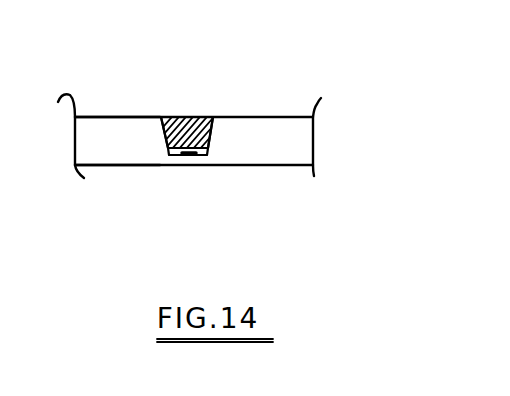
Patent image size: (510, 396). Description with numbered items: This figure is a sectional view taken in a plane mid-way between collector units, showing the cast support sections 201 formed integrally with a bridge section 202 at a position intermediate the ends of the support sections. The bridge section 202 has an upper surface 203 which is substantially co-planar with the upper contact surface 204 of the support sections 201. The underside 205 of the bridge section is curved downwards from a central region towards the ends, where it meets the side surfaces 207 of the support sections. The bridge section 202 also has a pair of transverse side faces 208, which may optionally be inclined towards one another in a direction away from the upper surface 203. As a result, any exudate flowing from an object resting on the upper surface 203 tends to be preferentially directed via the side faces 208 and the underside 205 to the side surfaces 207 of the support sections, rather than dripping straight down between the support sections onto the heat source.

The cast support section 201 is at (290, 111).
The bridge section 202 is at (199, 117).
The upper surface 203 is at (167, 117).
The contact surface 204 is at (105, 117).
The underside 205 is at (198, 155).
The side surface 207 is at (98, 146).
The transverse side face 208 is at (161, 118).